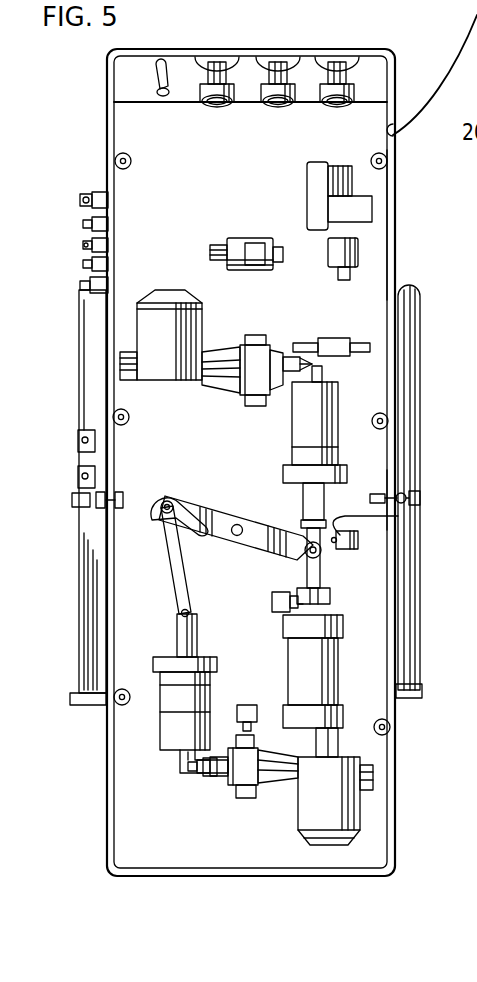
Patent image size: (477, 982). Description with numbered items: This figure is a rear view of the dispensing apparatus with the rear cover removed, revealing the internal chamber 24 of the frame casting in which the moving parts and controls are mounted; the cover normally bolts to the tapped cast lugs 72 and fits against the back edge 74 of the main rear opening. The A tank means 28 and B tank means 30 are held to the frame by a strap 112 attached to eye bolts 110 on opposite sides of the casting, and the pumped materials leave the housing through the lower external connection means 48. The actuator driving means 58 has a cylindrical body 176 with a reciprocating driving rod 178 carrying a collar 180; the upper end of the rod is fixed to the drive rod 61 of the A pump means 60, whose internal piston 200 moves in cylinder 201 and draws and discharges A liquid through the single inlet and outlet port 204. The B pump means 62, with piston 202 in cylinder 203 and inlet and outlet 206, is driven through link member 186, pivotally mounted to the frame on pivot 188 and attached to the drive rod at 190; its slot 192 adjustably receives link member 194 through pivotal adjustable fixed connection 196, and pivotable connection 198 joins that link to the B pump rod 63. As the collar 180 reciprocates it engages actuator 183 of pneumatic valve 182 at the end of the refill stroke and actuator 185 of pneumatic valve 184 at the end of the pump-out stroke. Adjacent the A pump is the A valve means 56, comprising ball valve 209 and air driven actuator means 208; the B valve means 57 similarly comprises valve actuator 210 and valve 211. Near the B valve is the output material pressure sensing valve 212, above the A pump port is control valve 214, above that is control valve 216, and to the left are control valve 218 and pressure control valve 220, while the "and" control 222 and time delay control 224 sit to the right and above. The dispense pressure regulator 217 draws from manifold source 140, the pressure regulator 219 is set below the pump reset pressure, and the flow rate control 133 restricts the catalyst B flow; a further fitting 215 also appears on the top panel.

The internal chamber 24 is at (124, 827).
The A tank means 28 is at (421, 326).
The B tank means 30 is at (92, 524).
The lower external connection means 48 is at (80, 500).
The A valve means 56 is at (238, 396).
The B valve means 57 is at (256, 792).
The actuator driving means 58 is at (343, 671).
The A pump means 60 is at (347, 424).
The drive rod 61 is at (392, 490).
The B pump means 62 is at (165, 738).
The B pump rod 63 is at (198, 633).
The tapped cast lugs 72 is at (130, 166).
The back edge 74 is at (396, 232).
The eye bolts 110 is at (412, 499).
The strap 112 is at (74, 501).
The flow rate control 133 is at (161, 95).
The manifold source 140 is at (100, 192).
The cylindrical body 176 is at (345, 690).
The driving rod 178 is at (322, 585).
The collar 180 is at (330, 596).
The pneumatic valve 182 is at (272, 601).
The actuator 183 is at (292, 618).
The pneumatic valve 184 is at (358, 545).
The actuator 185 is at (398, 516).
The link member 186 is at (233, 546).
The pivot 188 is at (239, 523).
The pivotal attachment 190 is at (306, 556).
The slot 192 is at (191, 512).
The link member 194 is at (178, 570).
The pivotal adjustable fixed connection 196 is at (167, 518).
The pivotable connection 198 is at (181, 614).
The internal piston 200 is at (338, 456).
The cylinder 201 is at (340, 440).
The internal piston 202 is at (183, 680).
The cylinder 203 is at (183, 713).
The inlet and outlet port 204 is at (322, 370).
The inlet and outlet 206 is at (186, 773).
The air driven actuator means 208 is at (202, 322).
The ball valve 209 is at (263, 336).
The valve actuator 210 is at (320, 845).
The valve 211 is at (239, 798).
The output material pressure sensing valve 212 is at (250, 705).
The control valve 214 is at (336, 338).
The connector 215 is at (279, 104).
The control valve 216 is at (358, 252).
The dispense pressure regulator 217 is at (217, 104).
The control valve 218 is at (245, 238).
The pressure regulator 219 is at (346, 104).
The pressure control valve 220 is at (255, 252).
The "and" control 222 is at (352, 180).
The time delay control 224 is at (372, 210).